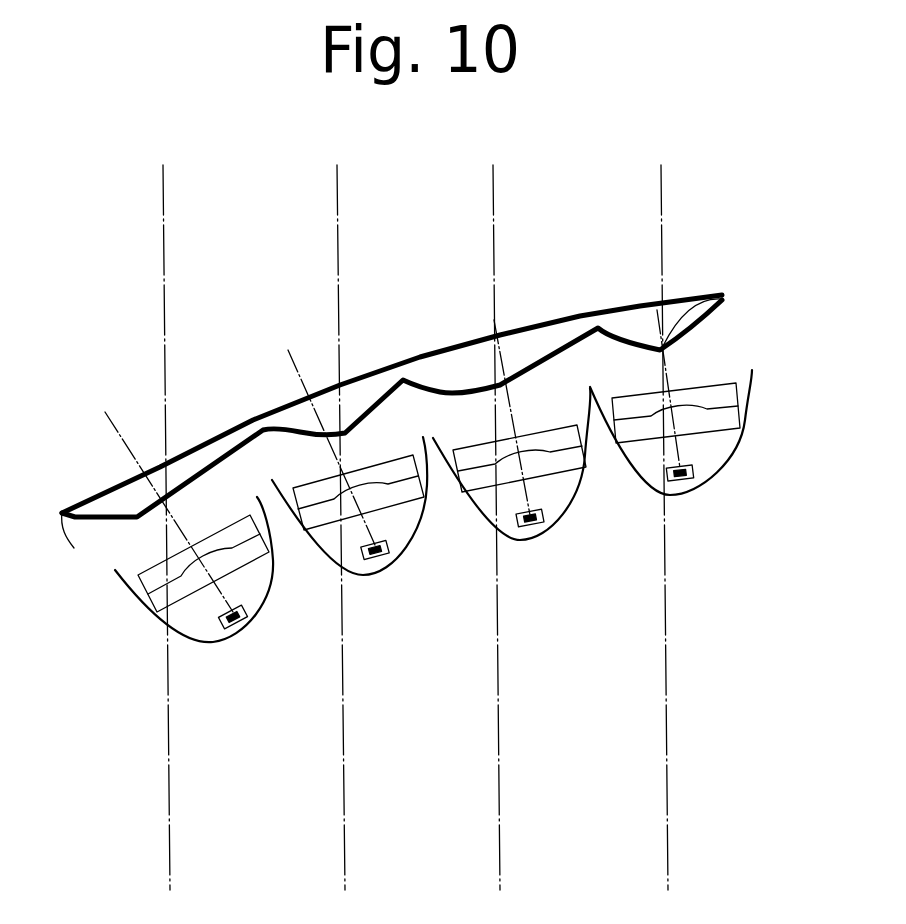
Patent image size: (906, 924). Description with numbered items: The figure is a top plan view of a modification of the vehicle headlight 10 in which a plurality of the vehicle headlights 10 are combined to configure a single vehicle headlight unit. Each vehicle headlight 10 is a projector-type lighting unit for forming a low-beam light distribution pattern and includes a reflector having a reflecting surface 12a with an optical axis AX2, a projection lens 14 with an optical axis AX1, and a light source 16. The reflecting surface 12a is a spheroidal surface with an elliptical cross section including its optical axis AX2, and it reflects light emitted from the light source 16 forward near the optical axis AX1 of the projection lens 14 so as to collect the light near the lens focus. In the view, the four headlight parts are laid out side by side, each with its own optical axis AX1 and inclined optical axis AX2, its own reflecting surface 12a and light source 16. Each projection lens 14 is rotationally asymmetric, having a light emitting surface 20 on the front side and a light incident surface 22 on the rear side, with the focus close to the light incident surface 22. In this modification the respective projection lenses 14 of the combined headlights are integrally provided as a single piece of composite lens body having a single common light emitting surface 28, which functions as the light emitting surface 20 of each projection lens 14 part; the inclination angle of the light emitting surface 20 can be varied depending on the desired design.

The vehicle headlight 10 is at (408, 406).
The reflecting surface 12a is at (258, 600).
The projection lens 14 is at (122, 492).
The light source 16 is at (235, 628).
The light emitting surface 20 is at (158, 503).
The light incident surface 22 is at (193, 480).
The common light emitting surface 28 is at (700, 297).
The optical axis of the projection lens AX1 is at (661, 188).
The optical axis of the reflector AX2 is at (733, 285).